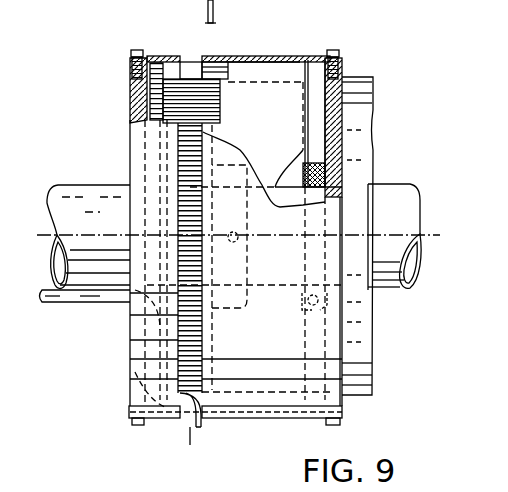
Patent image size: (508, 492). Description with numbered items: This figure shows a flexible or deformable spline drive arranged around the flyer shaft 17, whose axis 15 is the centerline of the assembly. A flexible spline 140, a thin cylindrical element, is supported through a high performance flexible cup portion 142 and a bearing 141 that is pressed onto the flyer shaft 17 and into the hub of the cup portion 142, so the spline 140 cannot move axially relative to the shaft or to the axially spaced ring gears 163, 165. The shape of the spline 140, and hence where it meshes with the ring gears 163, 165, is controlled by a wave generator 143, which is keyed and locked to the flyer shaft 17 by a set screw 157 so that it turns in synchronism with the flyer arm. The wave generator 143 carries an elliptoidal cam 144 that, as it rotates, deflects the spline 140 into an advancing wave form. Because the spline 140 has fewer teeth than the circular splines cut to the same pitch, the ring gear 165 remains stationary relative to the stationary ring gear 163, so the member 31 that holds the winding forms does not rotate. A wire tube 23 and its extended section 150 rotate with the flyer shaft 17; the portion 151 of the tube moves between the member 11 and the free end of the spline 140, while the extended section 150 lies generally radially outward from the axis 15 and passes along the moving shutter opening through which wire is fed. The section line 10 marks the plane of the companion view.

The section line 10 is at (254, 35).
The member 11 is at (133, 99).
The axis 15 is at (37, 235).
The flyer shaft 17 is at (400, 172).
The wire tube 23 is at (80, 302).
The member 31 is at (357, 77).
The flexible spline 140 is at (190, 62).
The bearing 141 is at (337, 160).
The flexible cup portion 142 is at (305, 58).
The wave generator 143 is at (236, 310).
The elliptoidal cam 144 is at (233, 118).
The extended section 150 is at (178, 428).
The portion of tube 151 is at (147, 343).
The set screw 157 is at (235, 242).
The ring gear 163 is at (173, 58).
The ring gear 165 is at (238, 63).